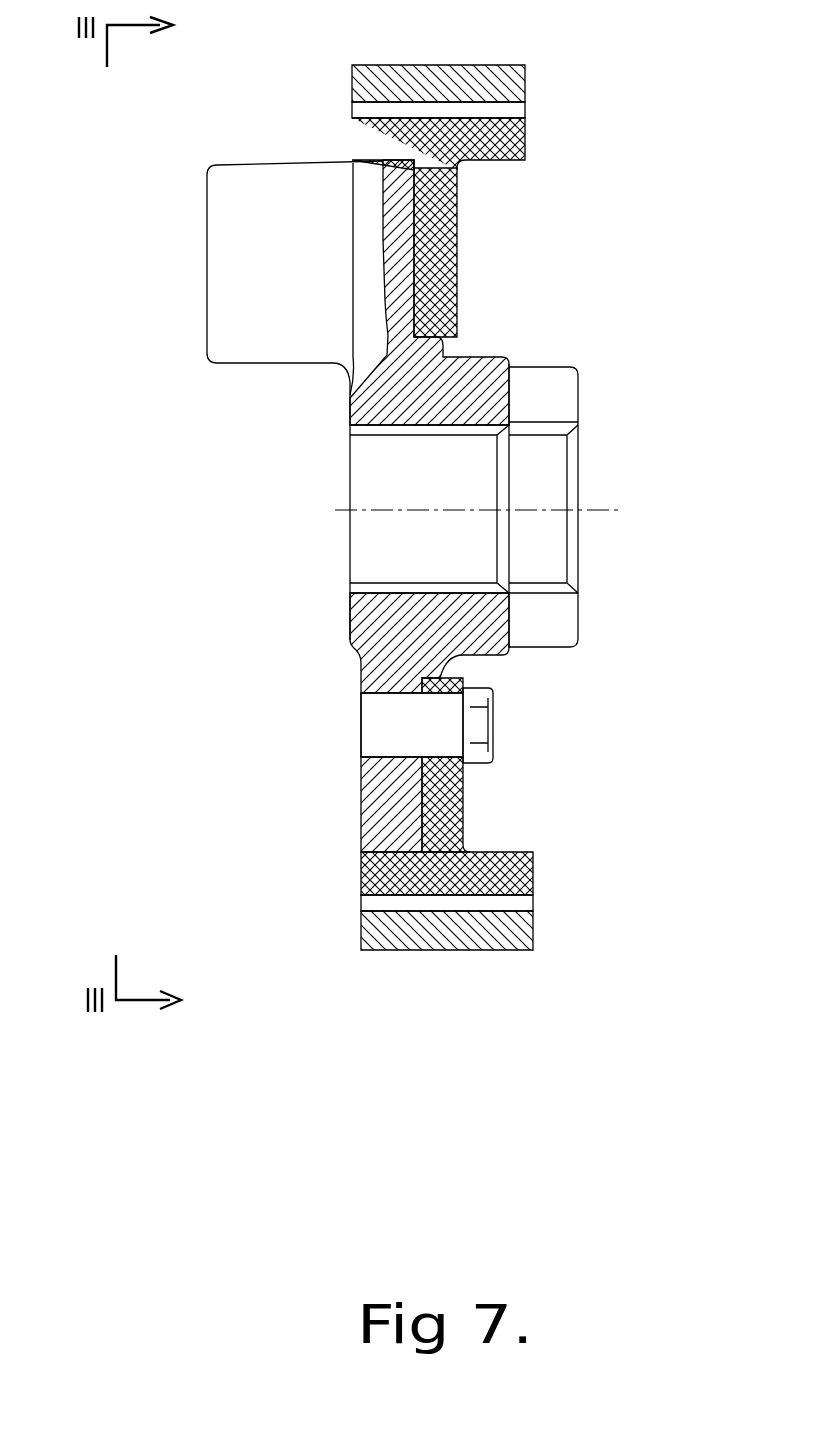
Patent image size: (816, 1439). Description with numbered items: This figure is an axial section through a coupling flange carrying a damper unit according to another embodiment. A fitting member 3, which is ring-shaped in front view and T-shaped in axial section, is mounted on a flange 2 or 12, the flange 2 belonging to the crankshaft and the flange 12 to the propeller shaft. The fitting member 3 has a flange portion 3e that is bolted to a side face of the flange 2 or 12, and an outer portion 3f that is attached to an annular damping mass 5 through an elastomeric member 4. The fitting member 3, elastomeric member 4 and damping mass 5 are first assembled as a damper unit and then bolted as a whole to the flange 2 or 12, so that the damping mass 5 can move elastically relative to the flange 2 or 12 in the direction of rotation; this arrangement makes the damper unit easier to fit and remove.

The flange 2 is at (390, 235).
The flange 12 is at (403, 329).
The fitting member 3 is at (514, 506).
The flange portion 3e is at (460, 268).
The outer portion 3f is at (528, 145).
The elastomeric member 4 is at (510, 108).
The damping mass 5 is at (525, 86).